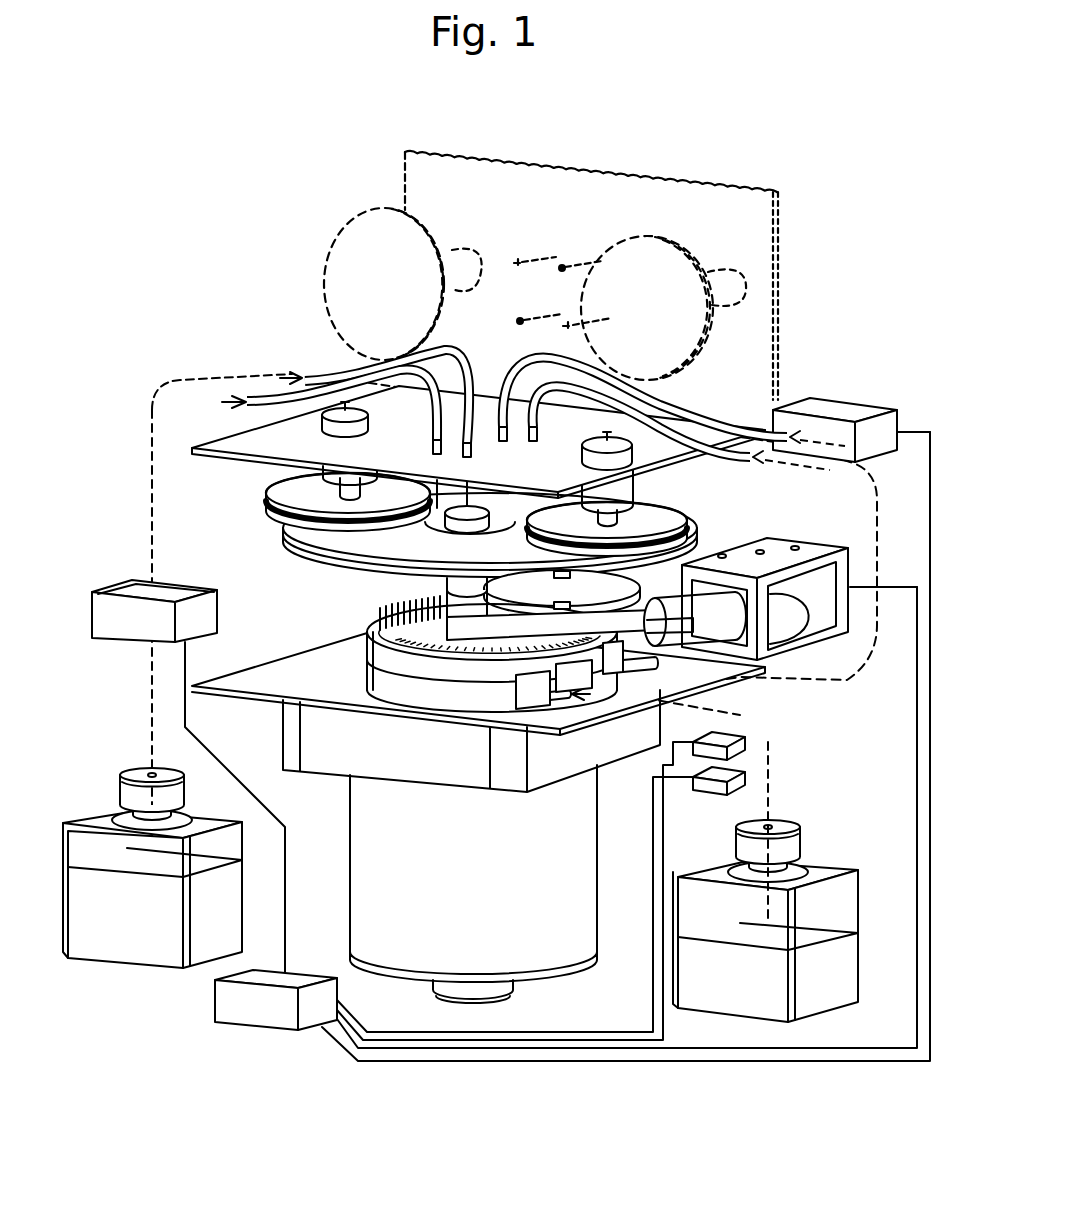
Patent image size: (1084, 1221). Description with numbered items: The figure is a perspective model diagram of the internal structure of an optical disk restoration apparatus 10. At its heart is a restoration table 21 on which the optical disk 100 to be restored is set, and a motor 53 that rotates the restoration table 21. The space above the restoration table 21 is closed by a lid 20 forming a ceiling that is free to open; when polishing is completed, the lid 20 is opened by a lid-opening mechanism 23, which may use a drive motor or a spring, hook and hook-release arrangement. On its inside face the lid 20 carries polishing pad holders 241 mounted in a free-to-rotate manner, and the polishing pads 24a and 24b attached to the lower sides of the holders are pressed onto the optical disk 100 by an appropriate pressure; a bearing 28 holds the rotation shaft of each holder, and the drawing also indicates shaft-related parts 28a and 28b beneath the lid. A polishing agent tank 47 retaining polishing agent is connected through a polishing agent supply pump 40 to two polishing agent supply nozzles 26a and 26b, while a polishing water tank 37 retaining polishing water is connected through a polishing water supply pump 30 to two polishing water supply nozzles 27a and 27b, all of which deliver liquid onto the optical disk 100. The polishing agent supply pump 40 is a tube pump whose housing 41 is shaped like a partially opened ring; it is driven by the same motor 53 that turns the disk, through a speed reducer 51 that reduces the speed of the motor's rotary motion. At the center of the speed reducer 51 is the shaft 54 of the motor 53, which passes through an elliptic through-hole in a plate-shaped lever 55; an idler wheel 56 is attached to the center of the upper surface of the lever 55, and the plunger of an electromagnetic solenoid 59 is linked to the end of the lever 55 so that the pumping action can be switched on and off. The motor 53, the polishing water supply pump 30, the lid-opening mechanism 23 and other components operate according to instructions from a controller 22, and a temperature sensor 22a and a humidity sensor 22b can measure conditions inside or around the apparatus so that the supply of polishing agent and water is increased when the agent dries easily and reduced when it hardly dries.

The restoration apparatus 10 is at (197, 233).
The lid 20 is at (405, 160).
The restoration table 21 is at (306, 568).
The controller 22 is at (216, 996).
The temperature sensor 22a is at (742, 744).
The humidity sensor 22b is at (742, 781).
The lid-opening mechanism 23 is at (842, 396).
The polishing pad 24a is at (330, 250).
The polishing pad 24b is at (680, 258).
The polishing pad holder 241 is at (268, 488).
The polishing agent supply nozzle 26a is at (562, 268).
The polishing agent supply nozzle 26b is at (522, 320).
The polishing water supply nozzle 27a is at (518, 262).
The polishing water supply nozzle 27b is at (568, 326).
The bearing 28 is at (460, 252).
The first shaft 28a is at (322, 473).
The second shaft 28b is at (636, 488).
The polishing water supply pump 30 is at (134, 580).
The polishing water tank 37 is at (103, 812).
The polishing agent supply pump 40 is at (275, 612).
The housing 41 is at (372, 672).
The polishing agent tank 47 is at (830, 862).
The speed reducer 51 is at (425, 640).
The motor 53 is at (578, 962).
The shaft 54 is at (447, 598).
The lever 55 is at (613, 637).
The idler wheel 56 is at (600, 612).
The electromagnetic solenoid 59 is at (792, 548).
The optical disk 100 is at (284, 538).